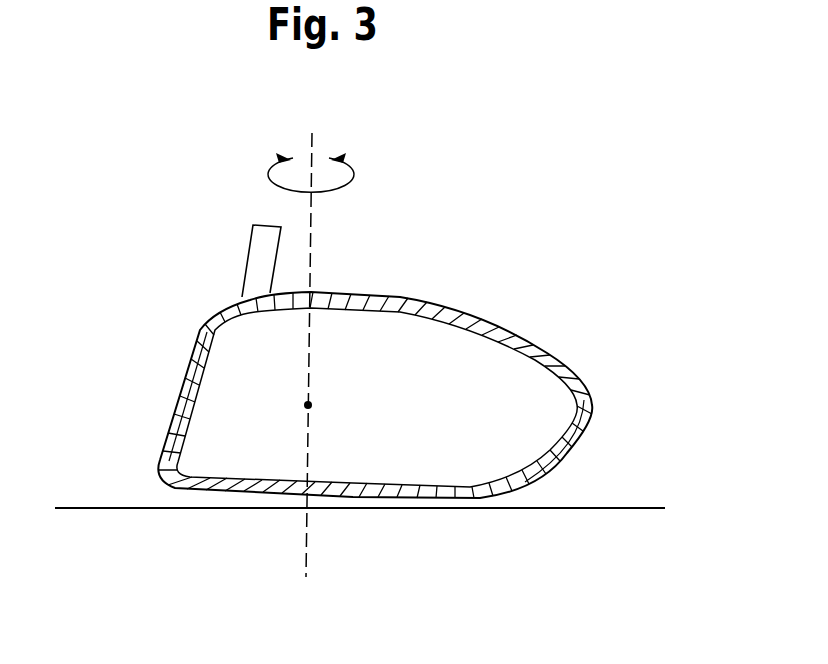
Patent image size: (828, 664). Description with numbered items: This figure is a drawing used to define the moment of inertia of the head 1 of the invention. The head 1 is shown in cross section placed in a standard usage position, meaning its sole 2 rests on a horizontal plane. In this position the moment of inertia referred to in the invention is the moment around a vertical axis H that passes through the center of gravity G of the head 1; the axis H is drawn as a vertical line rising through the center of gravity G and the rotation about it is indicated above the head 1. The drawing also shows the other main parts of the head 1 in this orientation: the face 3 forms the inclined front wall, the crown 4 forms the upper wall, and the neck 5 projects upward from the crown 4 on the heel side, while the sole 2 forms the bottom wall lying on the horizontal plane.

The head 1 is at (495, 292).
The sole 2 is at (360, 490).
The face 3 is at (187, 380).
The crown 4 is at (412, 295).
The neck 5 is at (258, 263).
The center of gravity G is at (313, 405).
The vertical axis H is at (303, 545).